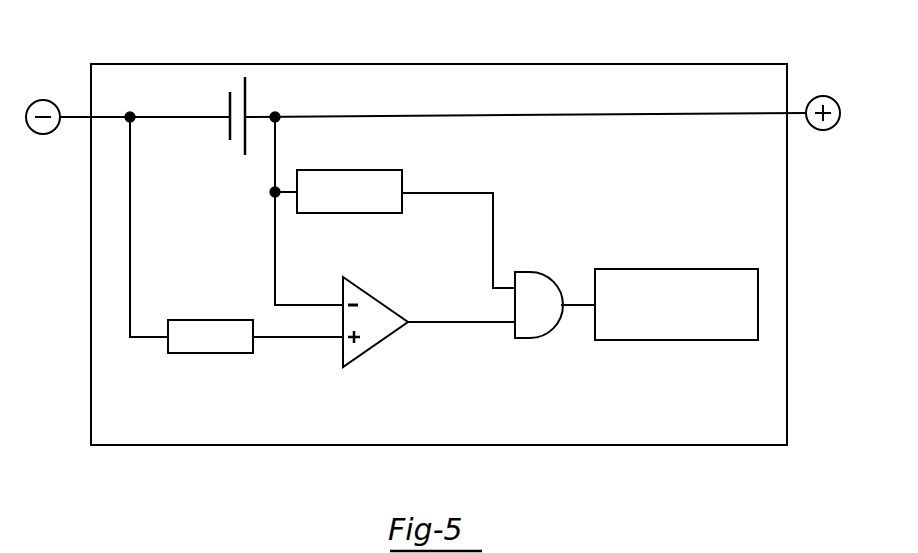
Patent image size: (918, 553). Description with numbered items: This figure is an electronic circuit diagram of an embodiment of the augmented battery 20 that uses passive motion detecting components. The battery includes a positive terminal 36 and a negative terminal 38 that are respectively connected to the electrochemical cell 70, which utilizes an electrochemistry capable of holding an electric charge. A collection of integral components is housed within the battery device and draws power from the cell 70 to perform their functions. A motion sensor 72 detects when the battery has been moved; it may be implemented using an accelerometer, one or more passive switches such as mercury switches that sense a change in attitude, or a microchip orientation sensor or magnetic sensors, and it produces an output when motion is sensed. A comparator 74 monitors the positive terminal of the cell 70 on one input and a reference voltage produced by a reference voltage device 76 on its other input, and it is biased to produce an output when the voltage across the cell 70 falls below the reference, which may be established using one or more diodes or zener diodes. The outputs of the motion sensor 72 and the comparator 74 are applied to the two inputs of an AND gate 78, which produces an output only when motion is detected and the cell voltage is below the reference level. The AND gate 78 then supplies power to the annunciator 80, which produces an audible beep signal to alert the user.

The augmented battery 20 is at (478, 57).
The positive terminal 36 is at (823, 96).
The negative terminal 38 is at (42, 100).
The electrochemical cell 70 is at (245, 97).
The motion sensor 72 is at (402, 180).
The comparator 74 is at (375, 345).
The reference voltage device 76 is at (213, 353).
The AND gate 78 is at (522, 338).
The annunciator 80 is at (686, 340).